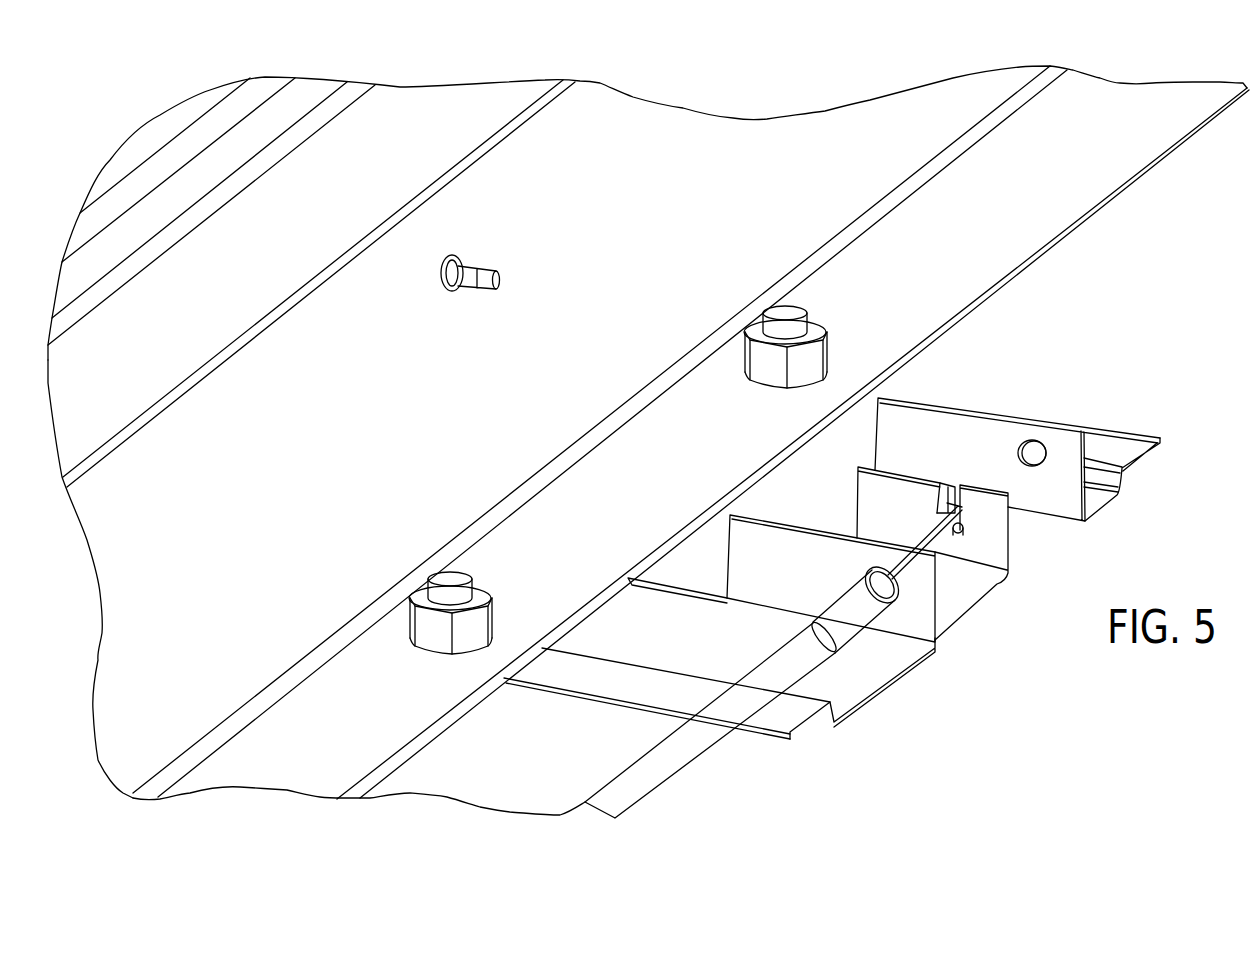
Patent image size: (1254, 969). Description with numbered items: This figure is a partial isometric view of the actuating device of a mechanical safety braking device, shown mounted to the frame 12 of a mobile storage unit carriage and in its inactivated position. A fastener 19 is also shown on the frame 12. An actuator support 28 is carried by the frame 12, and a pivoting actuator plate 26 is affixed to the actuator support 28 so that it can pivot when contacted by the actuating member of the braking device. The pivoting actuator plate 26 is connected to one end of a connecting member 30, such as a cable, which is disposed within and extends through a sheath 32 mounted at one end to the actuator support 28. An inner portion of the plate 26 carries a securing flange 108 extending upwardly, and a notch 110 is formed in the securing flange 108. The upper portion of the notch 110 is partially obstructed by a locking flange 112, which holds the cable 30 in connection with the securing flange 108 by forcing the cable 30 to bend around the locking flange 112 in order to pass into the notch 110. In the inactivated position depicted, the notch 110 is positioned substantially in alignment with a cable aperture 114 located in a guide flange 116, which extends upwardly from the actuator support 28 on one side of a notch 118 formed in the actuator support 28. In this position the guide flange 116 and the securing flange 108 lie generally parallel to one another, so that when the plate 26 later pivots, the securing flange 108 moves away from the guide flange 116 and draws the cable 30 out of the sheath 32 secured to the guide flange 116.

The frame 12 is at (603, 98).
The rivet 19 is at (468, 263).
The pivoting actuator plate 26 is at (951, 637).
The actuator support 28 is at (897, 695).
The connecting member 30 is at (943, 537).
The sheath 32 is at (695, 757).
The securing flange 108 is at (890, 470).
The notch 110 is at (964, 528).
The locking flange 112 is at (940, 500).
The cable aperture 114 is at (1046, 452).
The guide flange 116 is at (900, 403).
The notch 118 is at (1060, 518).